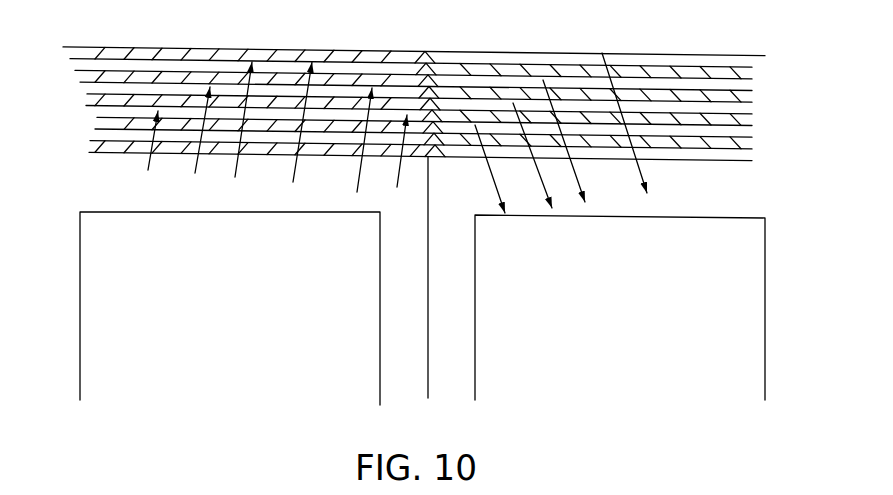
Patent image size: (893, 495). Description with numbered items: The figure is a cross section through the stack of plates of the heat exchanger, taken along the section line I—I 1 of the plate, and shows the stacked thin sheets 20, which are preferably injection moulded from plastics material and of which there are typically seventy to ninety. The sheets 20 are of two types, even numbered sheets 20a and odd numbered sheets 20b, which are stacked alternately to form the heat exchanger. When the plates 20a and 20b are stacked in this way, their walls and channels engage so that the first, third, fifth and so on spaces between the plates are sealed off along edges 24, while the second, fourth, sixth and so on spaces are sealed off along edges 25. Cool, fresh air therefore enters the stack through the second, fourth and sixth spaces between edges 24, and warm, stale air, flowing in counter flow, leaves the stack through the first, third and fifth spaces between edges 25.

The substrate body 1 is at (595, 302).
The stacked thin sheets 20 is at (786, 34).
The even numbered sheets 20a is at (752, 90).
The odd numbered sheets 20b is at (752, 102).
The edges 24 is at (55, 165).
The edges 25 is at (837, 53).